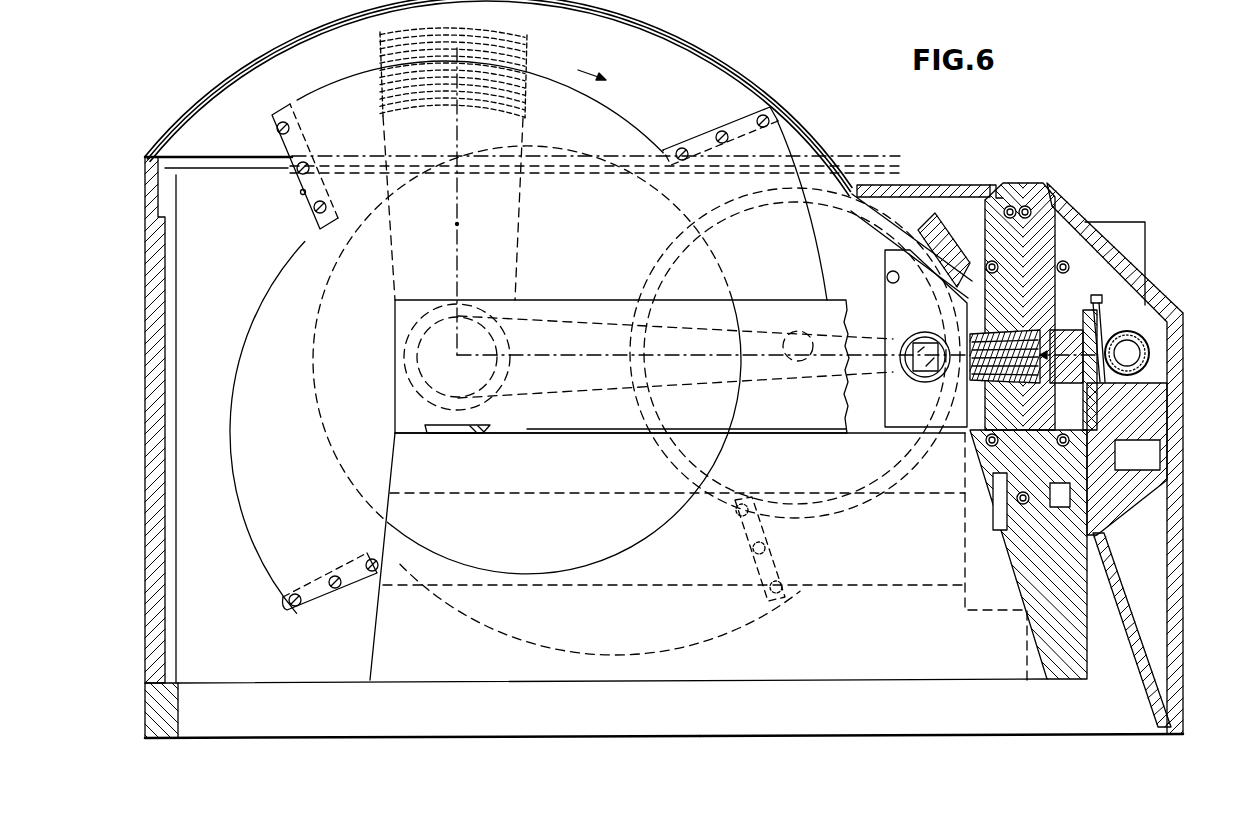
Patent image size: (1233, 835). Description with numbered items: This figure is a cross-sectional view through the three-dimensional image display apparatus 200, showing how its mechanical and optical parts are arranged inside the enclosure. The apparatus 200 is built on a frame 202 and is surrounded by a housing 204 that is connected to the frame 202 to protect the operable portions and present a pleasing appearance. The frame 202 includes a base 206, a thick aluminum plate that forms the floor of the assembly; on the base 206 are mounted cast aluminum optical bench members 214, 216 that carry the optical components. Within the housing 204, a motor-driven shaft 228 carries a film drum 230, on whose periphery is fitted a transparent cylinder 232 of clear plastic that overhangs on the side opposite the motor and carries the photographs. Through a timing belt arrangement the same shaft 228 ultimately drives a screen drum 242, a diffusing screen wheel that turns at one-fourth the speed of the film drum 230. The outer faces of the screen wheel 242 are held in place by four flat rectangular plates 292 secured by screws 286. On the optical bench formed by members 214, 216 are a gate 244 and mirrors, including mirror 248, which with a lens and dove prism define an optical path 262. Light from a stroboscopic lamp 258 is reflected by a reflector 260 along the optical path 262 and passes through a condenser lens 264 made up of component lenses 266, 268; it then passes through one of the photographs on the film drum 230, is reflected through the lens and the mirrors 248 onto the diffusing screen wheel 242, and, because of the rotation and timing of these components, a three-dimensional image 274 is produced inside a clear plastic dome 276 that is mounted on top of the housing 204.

The apparatus 200 is at (963, 153).
The frame 202 is at (276, 730).
The housing 204 is at (145, 412).
The base 206 is at (520, 730).
The optical bench member 214 is at (437, 643).
The optical bench member 216 is at (612, 417).
The shaft 228 is at (800, 331).
The film drum 230 is at (866, 505).
The transparent cylinder 232 is at (804, 526).
The screen drum 242 is at (268, 297).
The gate 244 is at (952, 376).
The mirror 248 is at (921, 341).
The stroboscopic lamp 258 is at (1131, 345).
The reflector 260 is at (1168, 350).
The optical path 262 is at (456, 252).
The condenser lens 264 is at (1084, 306).
The component lens 266 is at (1102, 325).
The component lens 268 is at (1040, 402).
The three-dimensional image 274 is at (512, 37).
The clear plastic dome 276 is at (198, 97).
The screws 286 is at (306, 162).
The flat rectangular plates 292 is at (305, 192).